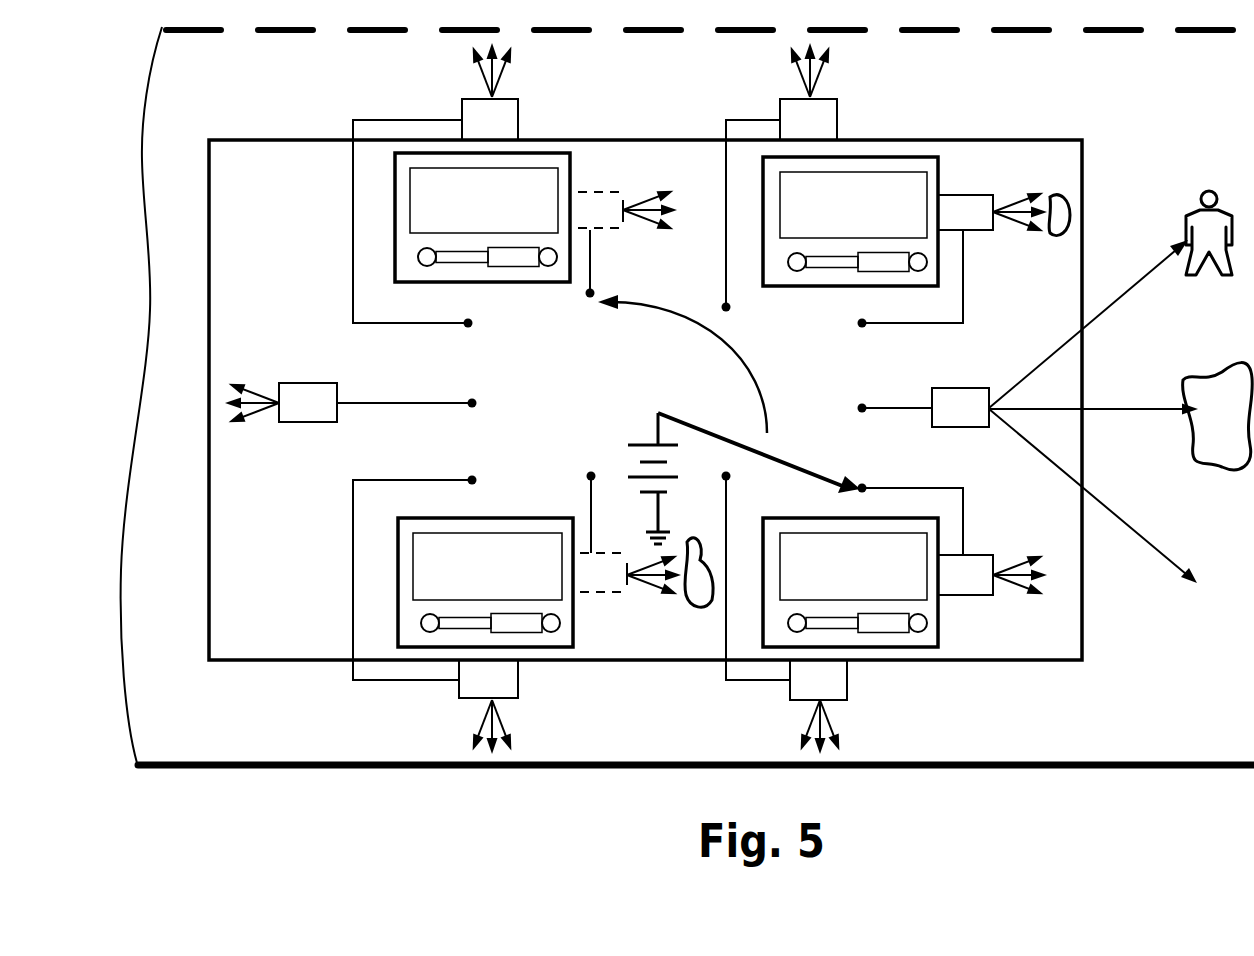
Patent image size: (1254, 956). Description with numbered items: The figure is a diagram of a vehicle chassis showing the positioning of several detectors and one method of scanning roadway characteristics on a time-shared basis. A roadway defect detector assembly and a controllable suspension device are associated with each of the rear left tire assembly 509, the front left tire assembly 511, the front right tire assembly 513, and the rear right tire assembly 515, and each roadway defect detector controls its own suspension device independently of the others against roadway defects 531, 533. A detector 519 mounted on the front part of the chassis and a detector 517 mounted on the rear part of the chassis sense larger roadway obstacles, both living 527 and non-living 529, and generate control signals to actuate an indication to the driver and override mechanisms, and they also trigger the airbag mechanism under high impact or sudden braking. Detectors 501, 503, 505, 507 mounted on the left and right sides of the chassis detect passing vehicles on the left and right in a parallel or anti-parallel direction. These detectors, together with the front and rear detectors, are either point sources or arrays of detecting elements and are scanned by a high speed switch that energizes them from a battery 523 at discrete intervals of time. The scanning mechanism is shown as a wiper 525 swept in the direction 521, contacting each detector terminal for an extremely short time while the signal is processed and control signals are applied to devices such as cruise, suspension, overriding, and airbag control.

The detector 501 is at (490, 91).
The detector 503 is at (808, 91).
The detector 505 is at (488, 707).
The detector 507 is at (818, 707).
The rear left tire assembly 509 is at (540, 153).
The front left tire assembly 511 is at (880, 157).
The front right tire assembly 513 is at (917, 648).
The rear right tire assembly 515 is at (543, 647).
The detector 517 is at (281, 403).
The detector 519 is at (1065, 411).
The direction 521 is at (635, 307).
The battery 523 is at (628, 445).
The wiper 525 is at (773, 455).
The living obstacle 527 is at (1213, 188).
The non-living obstacle 529 is at (1213, 462).
The roadway defect 531 is at (1068, 228).
The roadway defect 533 is at (697, 610).